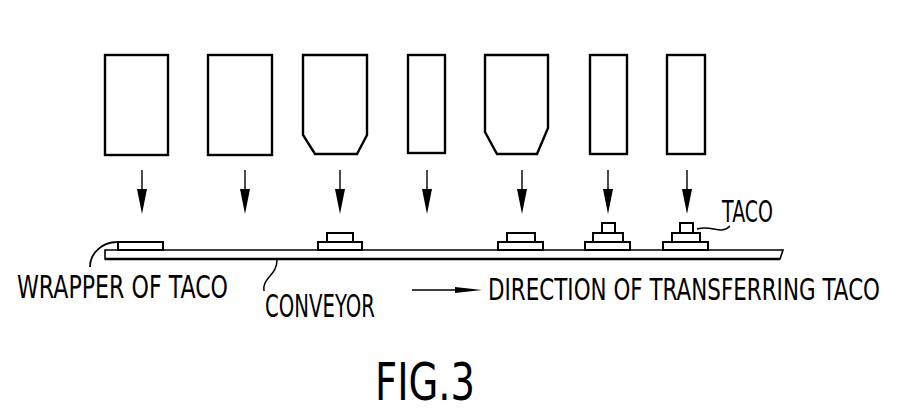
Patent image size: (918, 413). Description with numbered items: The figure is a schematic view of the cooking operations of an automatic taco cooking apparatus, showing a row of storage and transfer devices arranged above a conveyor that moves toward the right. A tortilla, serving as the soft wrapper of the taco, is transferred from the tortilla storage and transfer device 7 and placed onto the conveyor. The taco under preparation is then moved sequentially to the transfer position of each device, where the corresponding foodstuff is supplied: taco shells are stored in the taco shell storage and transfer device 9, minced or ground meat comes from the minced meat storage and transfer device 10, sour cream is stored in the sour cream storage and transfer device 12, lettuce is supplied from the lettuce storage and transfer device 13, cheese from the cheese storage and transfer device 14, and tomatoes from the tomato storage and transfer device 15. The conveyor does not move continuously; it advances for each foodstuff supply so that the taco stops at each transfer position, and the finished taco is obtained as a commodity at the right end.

The tortilla storage and transfer device 7 is at (133, 56).
The taco shell storage and transfer device 9 is at (235, 56).
The minced meat storage and transfer device 10 is at (330, 56).
The sour cream storage and transfer device 12 is at (421, 56).
The lettuce storage and transfer device 13 is at (497, 56).
The cheese storage and transfer device 14 is at (603, 56).
The tomato storage and transfer device 15 is at (680, 56).